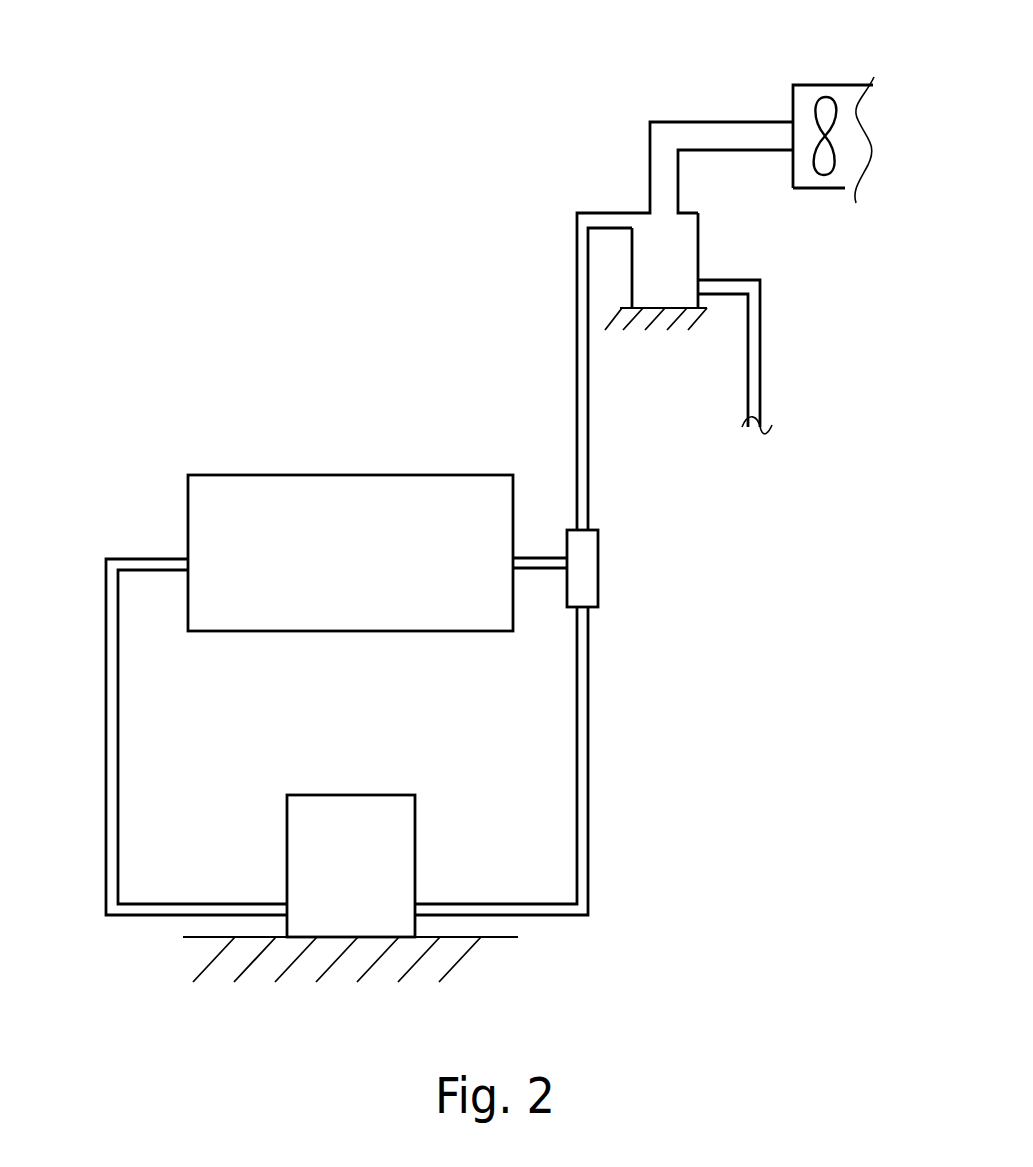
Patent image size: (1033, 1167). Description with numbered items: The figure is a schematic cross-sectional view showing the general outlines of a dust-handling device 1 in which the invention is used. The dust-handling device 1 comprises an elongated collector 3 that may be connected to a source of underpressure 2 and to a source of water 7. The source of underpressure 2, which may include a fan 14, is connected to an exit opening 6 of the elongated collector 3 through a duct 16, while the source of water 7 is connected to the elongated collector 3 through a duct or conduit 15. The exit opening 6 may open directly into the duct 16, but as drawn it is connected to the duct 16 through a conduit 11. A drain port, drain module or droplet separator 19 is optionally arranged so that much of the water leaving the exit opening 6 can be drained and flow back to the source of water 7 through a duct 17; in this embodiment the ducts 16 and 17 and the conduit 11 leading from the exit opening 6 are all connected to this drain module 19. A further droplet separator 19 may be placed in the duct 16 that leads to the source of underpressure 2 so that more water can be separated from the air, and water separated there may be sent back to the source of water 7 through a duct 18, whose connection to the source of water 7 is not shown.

The dust-handling device 1 is at (158, 501).
The source of underpressure 2 is at (807, 139).
The elongated collector 3 is at (350, 507).
The exit opening 6 is at (514, 553).
The source of water 7 is at (416, 845).
The conduit 11 is at (548, 572).
The fan 14 is at (838, 153).
The duct or conduit 15 is at (106, 733).
The duct/conduit 16 is at (589, 443).
The duct/conduit 17 is at (589, 803).
The duct/conduit 18 is at (762, 370).
The drain port/drain module/droplet separator 19 is at (600, 565).